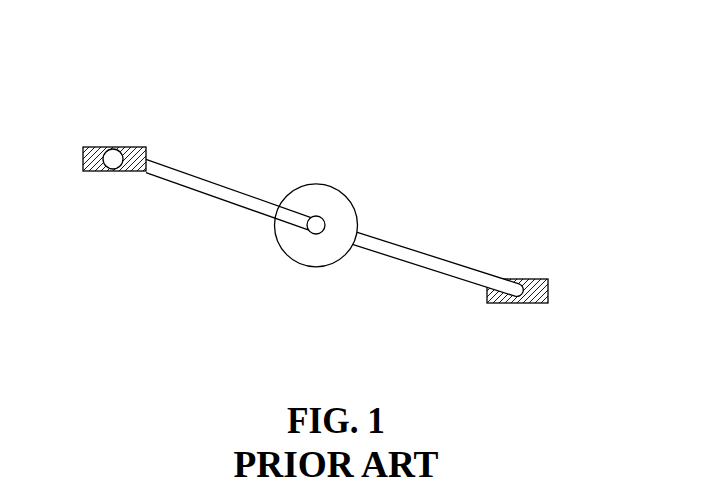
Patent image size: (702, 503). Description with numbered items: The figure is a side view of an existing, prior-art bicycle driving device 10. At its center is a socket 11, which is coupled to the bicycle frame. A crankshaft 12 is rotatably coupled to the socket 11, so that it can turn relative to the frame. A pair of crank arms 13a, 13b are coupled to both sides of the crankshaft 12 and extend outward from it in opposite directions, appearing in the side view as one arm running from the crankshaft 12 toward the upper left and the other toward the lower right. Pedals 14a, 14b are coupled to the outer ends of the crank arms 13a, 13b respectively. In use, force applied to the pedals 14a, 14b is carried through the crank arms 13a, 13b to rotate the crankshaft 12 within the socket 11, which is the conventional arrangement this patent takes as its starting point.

The bicycle driving device 10 is at (526, 68).
The socket 11 is at (347, 197).
The crankshaft 12 is at (315, 230).
The crank arm 13a is at (200, 198).
The crank arm 13b is at (427, 250).
The pedal 14a is at (92, 173).
The pedal 14b is at (527, 303).